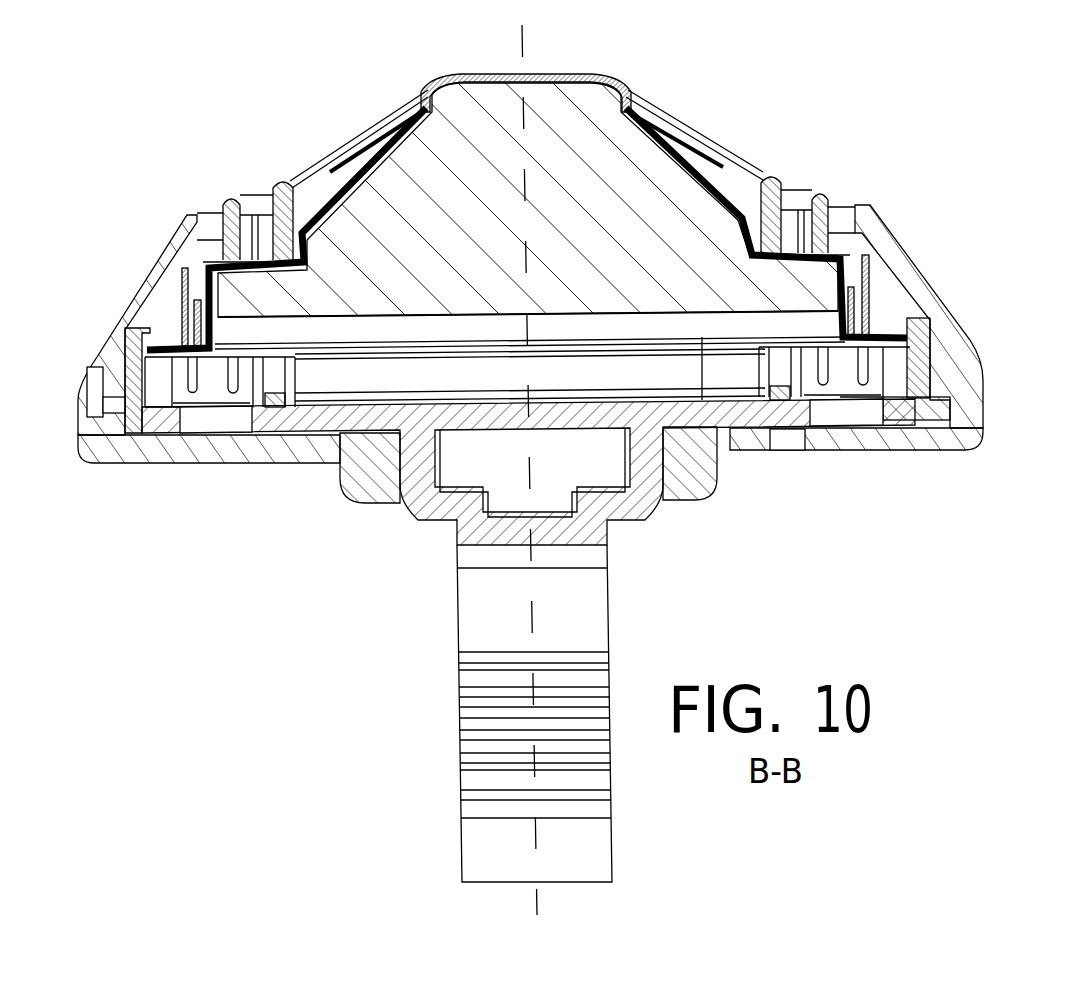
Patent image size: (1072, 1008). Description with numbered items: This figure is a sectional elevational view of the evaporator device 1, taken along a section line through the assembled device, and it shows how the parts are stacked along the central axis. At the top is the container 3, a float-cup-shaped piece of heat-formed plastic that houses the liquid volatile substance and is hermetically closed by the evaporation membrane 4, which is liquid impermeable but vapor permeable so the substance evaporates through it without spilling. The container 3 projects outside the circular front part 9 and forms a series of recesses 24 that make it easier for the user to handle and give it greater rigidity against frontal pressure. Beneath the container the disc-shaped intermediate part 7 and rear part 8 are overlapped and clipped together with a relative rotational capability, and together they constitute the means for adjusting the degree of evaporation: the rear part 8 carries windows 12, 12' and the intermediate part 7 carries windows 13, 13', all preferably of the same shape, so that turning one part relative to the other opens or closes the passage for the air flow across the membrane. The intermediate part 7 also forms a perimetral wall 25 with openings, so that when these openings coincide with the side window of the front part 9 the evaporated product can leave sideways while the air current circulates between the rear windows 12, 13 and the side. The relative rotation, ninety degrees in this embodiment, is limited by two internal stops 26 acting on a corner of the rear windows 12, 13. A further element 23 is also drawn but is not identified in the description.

The evaporator device 1 is at (745, 101).
The container 3 is at (595, 77).
The evaporation membrane 4 is at (703, 388).
The intermediate part 7 is at (927, 400).
The rear part 8 is at (973, 443).
The front part 9 is at (893, 230).
The window 12 is at (834, 459).
The window 12' is at (235, 469).
The window 13 is at (782, 484).
The window 13' is at (265, 488).
The yoke sheet 23 is at (887, 323).
The recesses 24 is at (350, 173).
The perimetral wall 25 is at (133, 363).
The internal stops 26 is at (273, 396).